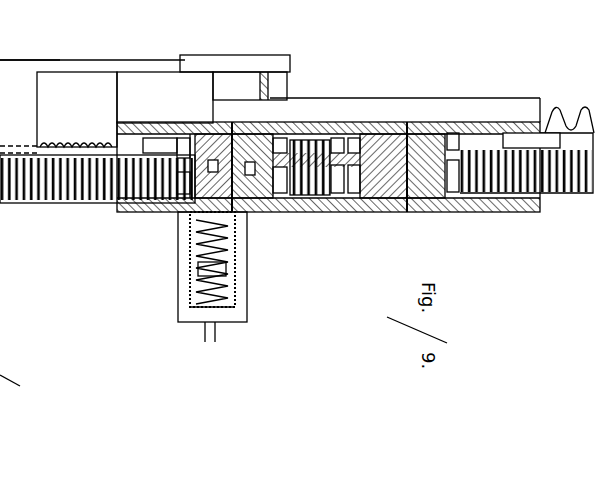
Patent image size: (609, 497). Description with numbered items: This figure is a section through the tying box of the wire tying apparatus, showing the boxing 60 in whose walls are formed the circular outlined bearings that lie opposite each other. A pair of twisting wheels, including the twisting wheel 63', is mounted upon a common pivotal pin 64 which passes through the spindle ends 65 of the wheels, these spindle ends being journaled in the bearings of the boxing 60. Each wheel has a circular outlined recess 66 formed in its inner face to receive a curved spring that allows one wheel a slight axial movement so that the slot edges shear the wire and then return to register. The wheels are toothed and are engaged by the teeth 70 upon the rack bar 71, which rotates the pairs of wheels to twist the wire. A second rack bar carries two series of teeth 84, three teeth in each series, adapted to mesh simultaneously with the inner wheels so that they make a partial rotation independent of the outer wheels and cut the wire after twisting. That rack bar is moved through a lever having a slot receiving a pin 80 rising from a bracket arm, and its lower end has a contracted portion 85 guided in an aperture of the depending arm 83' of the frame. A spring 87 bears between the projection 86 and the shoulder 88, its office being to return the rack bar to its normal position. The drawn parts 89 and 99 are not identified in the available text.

The pin 80 is at (22, 72).
The depending arm 83' is at (306, 111).
The projection 86 is at (200, 122).
The shoulder 88 is at (217, 122).
The spring 87 is at (91, 142).
The partition plate 89 is at (243, 122).
The series of teeth 84 is at (284, 122).
The hatched sleeve 99 is at (414, 122).
The contracted portion 85 is at (550, 126).
The boxing 60 is at (520, 212).
The teeth 70 is at (95, 205).
The rack bar 71 is at (22, 205).
The spindle ends 65 is at (187, 221).
The pivotal pin 64 is at (250, 218).
The twisting wheel 63' is at (246, 247).
The circular outlined recess 66 is at (275, 217).